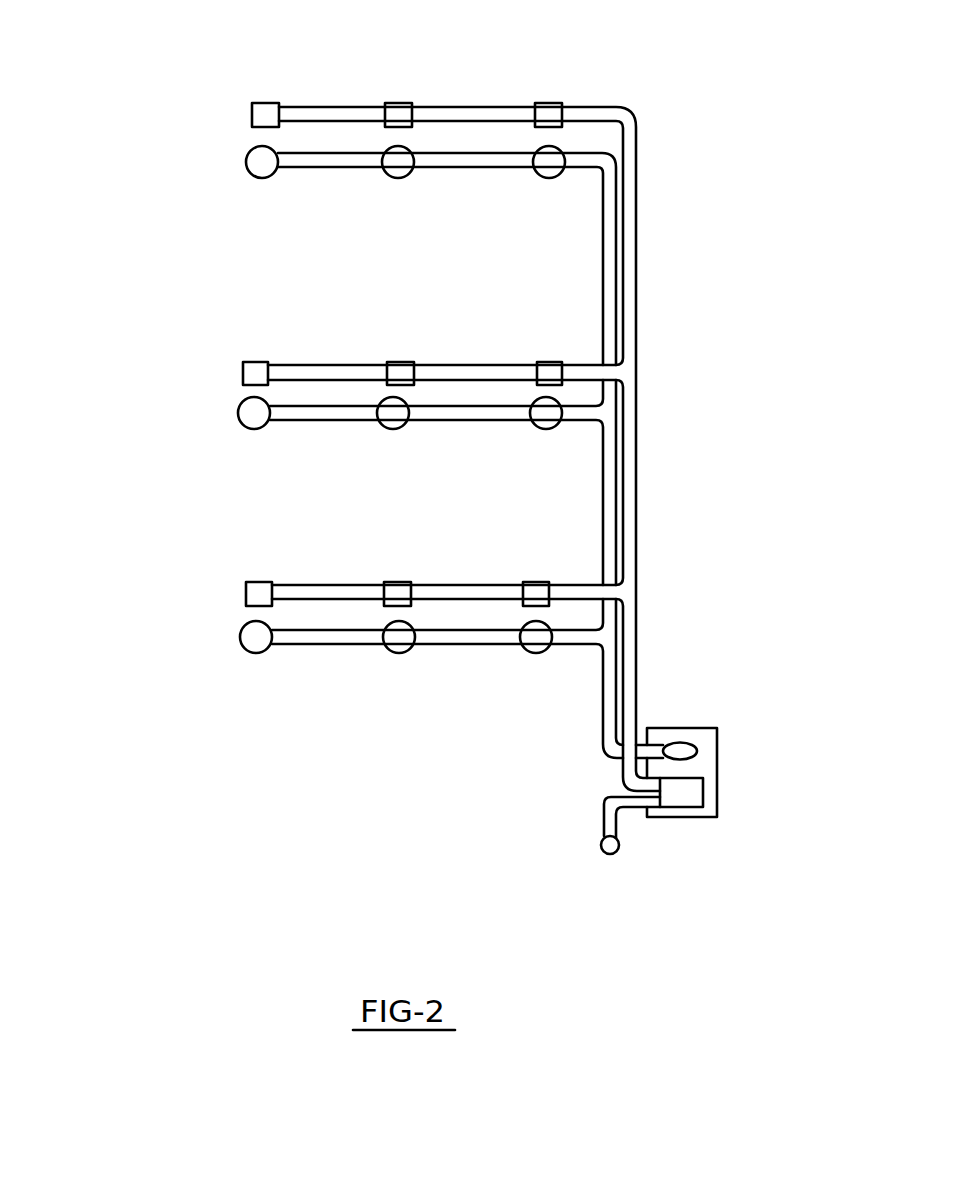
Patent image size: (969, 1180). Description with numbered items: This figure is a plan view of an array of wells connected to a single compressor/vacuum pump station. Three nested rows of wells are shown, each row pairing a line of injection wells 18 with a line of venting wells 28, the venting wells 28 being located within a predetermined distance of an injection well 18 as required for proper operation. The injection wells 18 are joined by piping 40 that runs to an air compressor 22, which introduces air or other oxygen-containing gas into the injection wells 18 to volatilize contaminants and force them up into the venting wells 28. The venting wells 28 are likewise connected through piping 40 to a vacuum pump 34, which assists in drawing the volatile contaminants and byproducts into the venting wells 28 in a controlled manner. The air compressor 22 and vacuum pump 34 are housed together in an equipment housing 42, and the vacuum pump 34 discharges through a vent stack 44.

The injection well 18 is at (545, 173).
The air compressor 22 is at (682, 748).
The venting well 28 is at (278, 107).
The vacuum pump 34 is at (692, 797).
The pipe network 40 is at (635, 278).
The equipment housing 42 is at (710, 757).
The vent stack 44 is at (618, 855).